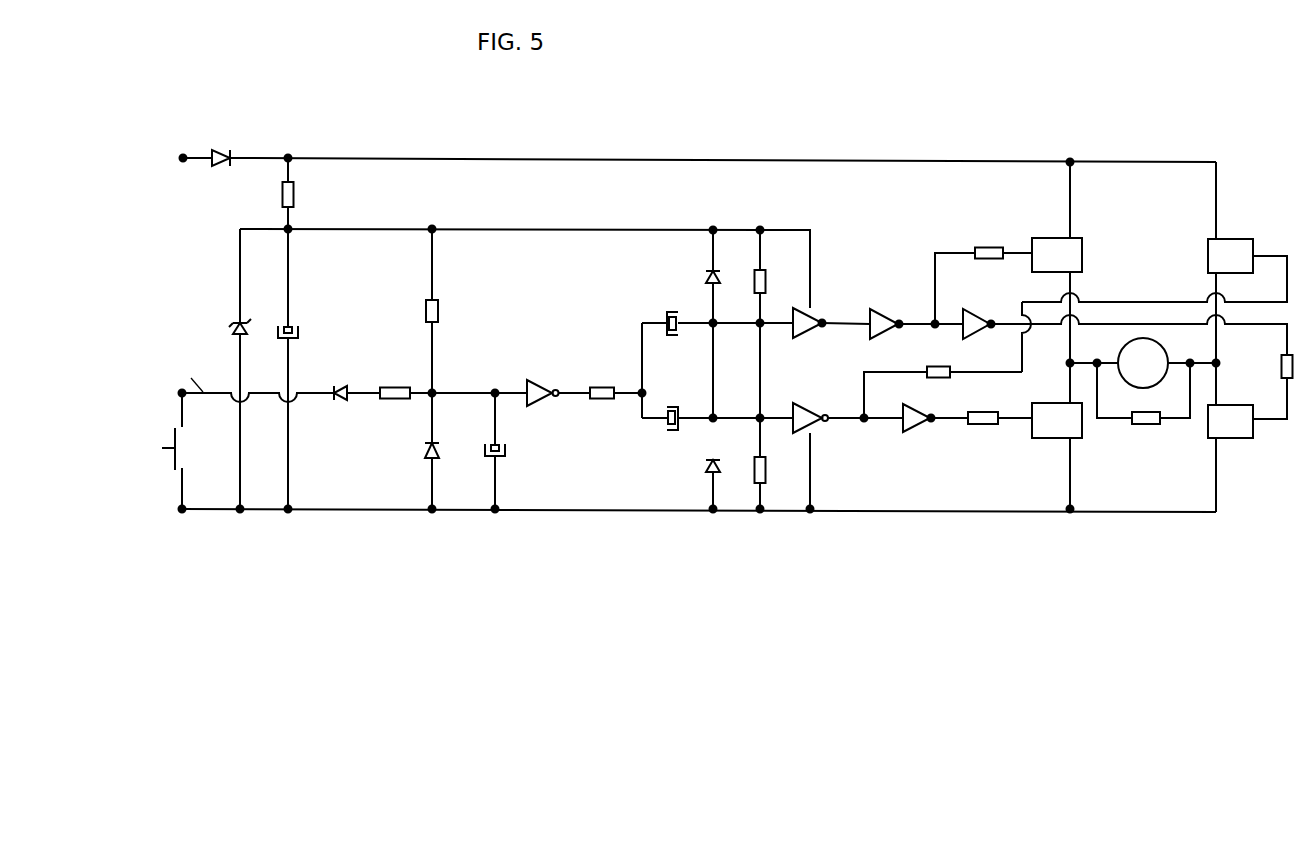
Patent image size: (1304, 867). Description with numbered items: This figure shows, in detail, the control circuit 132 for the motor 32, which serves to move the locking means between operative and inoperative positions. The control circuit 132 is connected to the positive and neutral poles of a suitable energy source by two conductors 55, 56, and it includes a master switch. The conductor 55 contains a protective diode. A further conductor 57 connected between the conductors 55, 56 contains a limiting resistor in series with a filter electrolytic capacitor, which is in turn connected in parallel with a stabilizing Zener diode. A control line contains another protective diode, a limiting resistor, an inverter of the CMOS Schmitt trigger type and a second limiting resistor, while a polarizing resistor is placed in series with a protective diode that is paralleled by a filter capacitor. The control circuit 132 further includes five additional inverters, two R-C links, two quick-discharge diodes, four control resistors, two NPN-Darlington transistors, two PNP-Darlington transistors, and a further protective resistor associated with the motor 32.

The control circuit 132 is at (878, 128).
The conductor 55 is at (320, 157).
The conductor 56 is at (360, 512).
The conductor 57 is at (290, 270).
The motor 32 is at (1165, 353).